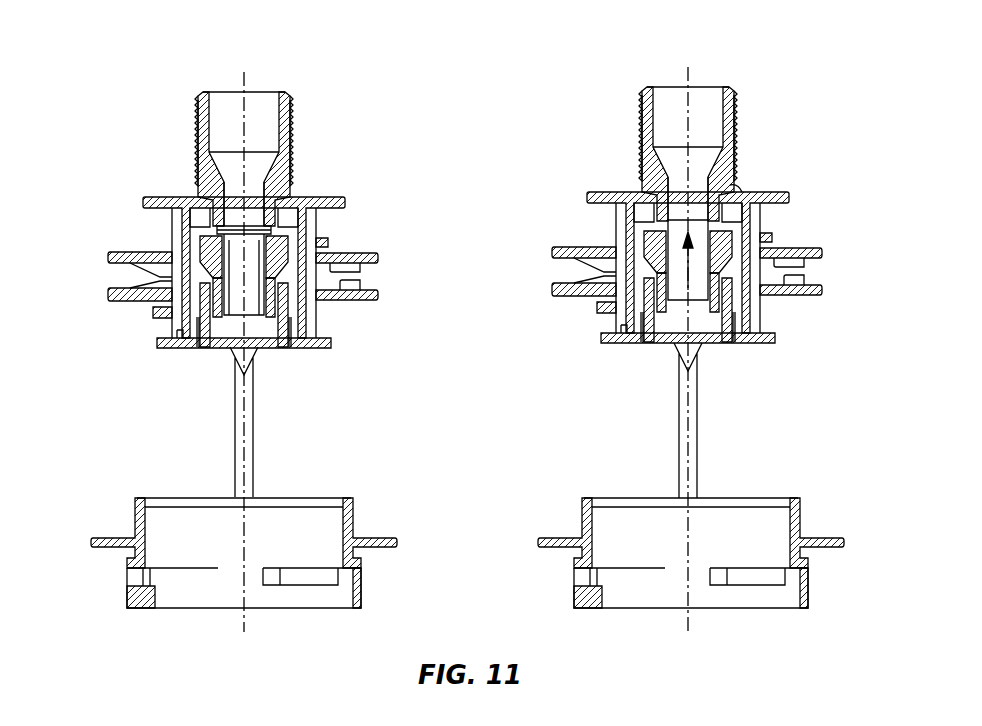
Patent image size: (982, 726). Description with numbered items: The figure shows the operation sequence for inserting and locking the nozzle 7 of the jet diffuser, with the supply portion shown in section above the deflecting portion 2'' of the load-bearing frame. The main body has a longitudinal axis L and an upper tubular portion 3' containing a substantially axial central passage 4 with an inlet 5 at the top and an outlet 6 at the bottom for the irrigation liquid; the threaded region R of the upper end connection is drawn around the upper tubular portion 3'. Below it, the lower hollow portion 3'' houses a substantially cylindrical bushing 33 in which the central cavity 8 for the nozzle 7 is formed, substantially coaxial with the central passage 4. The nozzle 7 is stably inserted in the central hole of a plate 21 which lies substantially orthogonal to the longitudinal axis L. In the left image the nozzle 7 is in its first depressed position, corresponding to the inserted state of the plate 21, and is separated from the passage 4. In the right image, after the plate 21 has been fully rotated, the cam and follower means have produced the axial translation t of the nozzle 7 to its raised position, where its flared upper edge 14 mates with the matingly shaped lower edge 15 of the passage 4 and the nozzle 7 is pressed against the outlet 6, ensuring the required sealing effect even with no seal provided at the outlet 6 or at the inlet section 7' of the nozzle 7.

The longitudinal axis L is at (240, 78).
The inlet 5 is at (277, 90).
The central passage 4 is at (226, 122).
The upper tubular portion 3' is at (538, 122).
The thread region R is at (197, 105).
The outlet 6 is at (296, 182).
The central cavity 8 is at (204, 217).
The lower hollow portion 3'' is at (491, 276).
The flared upper edge 14 is at (127, 253).
The bushing 33 is at (153, 311).
The lower edge 15 is at (215, 237).
The plate 21 is at (300, 246).
The nozzle 7 is at (494, 388).
The inlet section 7' is at (772, 177).
The translation t is at (716, 343).
The deflecting portion 2'' is at (461, 544).